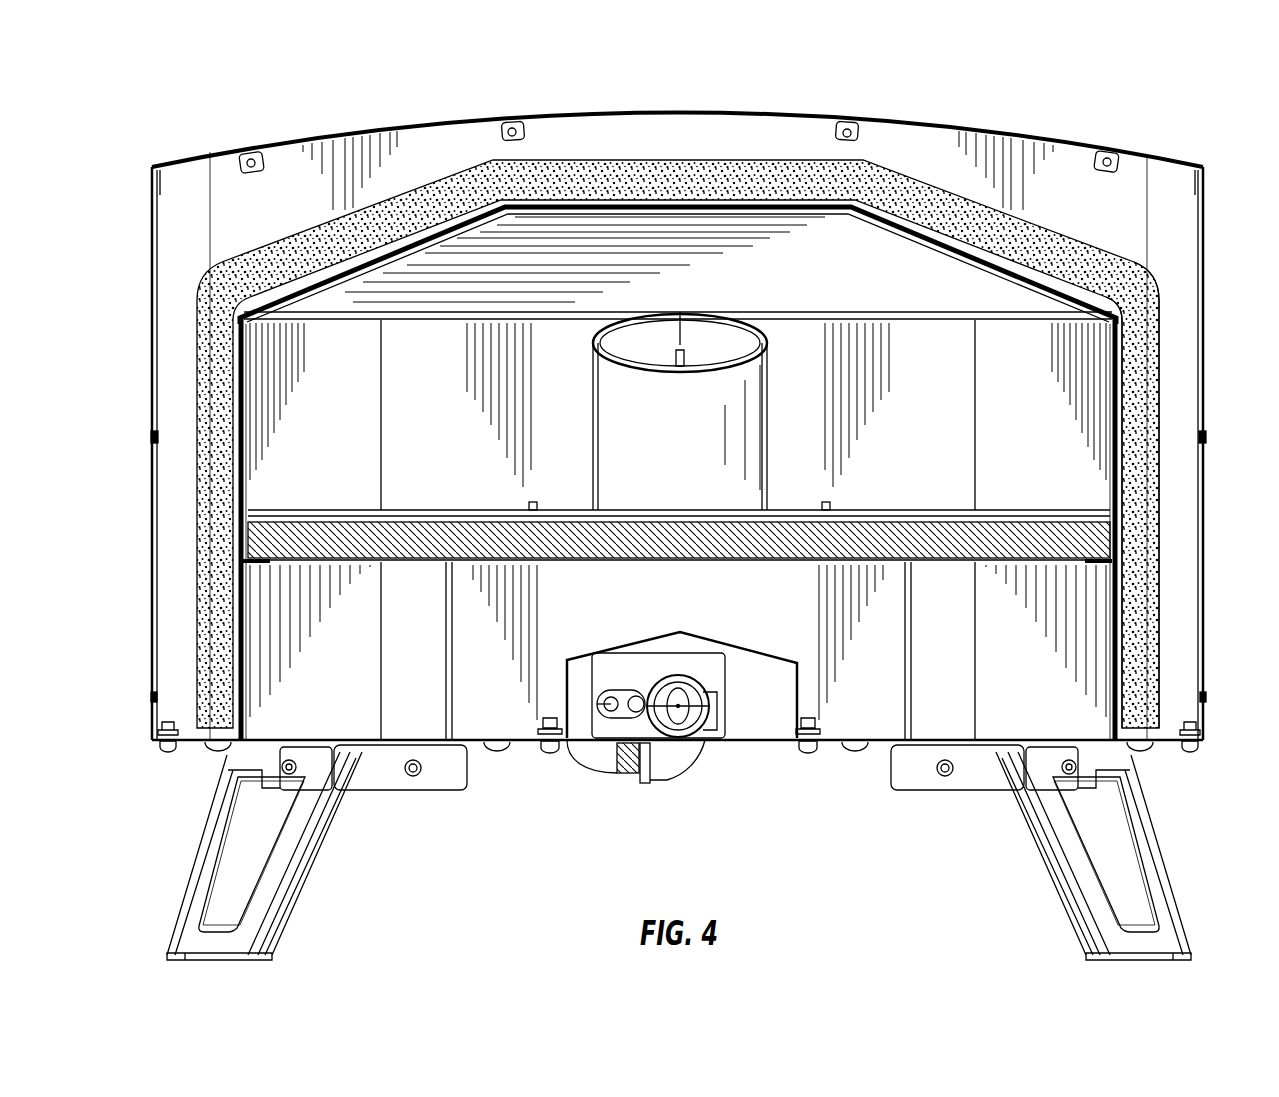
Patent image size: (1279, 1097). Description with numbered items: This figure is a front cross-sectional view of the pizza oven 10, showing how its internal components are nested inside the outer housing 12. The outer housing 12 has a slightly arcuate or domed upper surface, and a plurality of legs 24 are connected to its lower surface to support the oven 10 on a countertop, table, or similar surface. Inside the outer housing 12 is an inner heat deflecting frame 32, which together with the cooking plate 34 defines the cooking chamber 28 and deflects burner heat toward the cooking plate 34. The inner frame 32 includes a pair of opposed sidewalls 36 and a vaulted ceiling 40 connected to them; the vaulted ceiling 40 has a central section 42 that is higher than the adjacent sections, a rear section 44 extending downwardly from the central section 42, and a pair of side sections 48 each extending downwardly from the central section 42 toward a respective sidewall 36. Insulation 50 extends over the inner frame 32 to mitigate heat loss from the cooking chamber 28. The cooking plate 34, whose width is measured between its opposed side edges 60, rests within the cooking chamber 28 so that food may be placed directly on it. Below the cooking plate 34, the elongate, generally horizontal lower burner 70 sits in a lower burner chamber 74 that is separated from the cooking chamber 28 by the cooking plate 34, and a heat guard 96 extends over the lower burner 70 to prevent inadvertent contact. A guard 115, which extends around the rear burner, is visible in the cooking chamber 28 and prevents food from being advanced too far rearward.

The oven 10 is at (200, 82).
The outer housing 12 is at (136, 219).
The legs 24 is at (192, 898).
The cooking chamber 28 is at (824, 452).
The inner heat deflecting frame 32 is at (900, 200).
The cooking plate 34 is at (872, 522).
The opposed sidewalls 36 is at (240, 460).
The vaulted ceiling 40 is at (559, 198).
The central section 42 is at (673, 207).
The rear section 44 is at (788, 263).
The side sections 48 is at (393, 255).
The insulation 50 is at (1143, 307).
The side edges 60 is at (243, 598).
The lower burner 70 is at (684, 658).
The lower burner chamber 74 is at (520, 638).
The heat guard 96 is at (750, 654).
The guard 115 is at (630, 460).